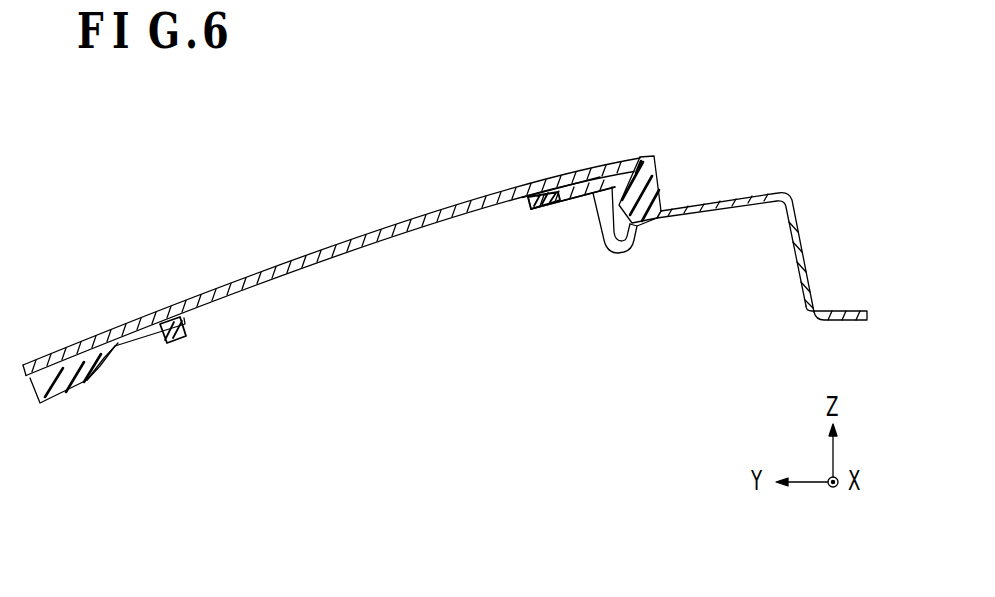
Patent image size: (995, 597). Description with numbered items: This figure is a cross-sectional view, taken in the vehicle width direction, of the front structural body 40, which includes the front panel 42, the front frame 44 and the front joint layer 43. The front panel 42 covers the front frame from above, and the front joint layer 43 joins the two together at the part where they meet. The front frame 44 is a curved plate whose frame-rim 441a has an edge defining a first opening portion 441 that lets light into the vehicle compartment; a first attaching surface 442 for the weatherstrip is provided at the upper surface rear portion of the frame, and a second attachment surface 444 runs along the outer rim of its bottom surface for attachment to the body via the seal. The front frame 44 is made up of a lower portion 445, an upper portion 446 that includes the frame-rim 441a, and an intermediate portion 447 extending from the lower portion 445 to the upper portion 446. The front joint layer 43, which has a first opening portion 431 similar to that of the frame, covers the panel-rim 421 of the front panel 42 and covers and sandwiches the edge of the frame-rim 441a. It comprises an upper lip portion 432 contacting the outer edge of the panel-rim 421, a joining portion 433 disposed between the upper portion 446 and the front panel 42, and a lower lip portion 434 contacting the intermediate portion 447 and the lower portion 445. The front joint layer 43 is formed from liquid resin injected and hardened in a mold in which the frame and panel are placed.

The front structural body 40 is at (168, 170).
The front panel 42 is at (250, 277).
The panel-rim 421 is at (578, 172).
The front joint layer 43 is at (650, 157).
The first opening portion 431 is at (518, 207).
The upper lip portion 432 is at (640, 168).
The joining portion 433 is at (590, 216).
The lower lip portion 434 is at (658, 182).
The front frame 44 is at (448, 301).
The first opening portion 441 is at (545, 208).
The frame-rim 441a is at (573, 208).
The first attaching surface 442 is at (733, 197).
The second attachment surface 444 is at (60, 398).
The lower portion 445 is at (756, 193).
The upper portion 446 is at (630, 253).
The intermediate portion 447 is at (624, 234).